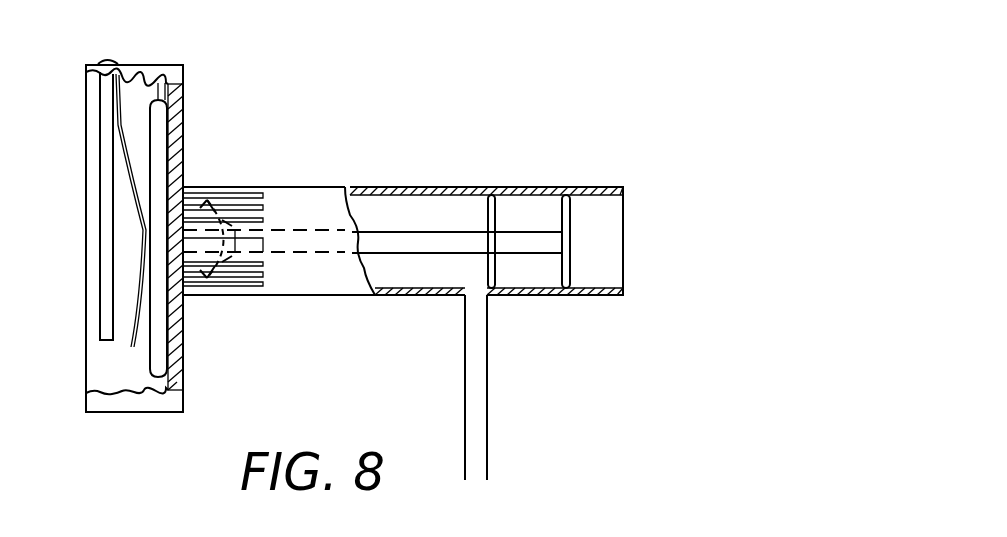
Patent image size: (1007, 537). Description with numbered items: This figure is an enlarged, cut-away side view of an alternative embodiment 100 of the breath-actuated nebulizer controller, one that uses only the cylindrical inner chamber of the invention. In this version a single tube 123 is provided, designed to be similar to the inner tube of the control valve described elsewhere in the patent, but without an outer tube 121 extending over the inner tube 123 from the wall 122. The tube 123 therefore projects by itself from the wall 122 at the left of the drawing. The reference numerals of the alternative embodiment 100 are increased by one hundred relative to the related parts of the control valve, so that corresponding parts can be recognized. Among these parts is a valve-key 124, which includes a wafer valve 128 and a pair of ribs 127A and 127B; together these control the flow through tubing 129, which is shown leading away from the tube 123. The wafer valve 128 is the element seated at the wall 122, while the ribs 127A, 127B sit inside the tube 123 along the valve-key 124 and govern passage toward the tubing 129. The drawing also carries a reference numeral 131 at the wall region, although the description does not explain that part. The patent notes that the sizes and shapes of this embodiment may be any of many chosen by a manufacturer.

The alternative embodiment 100 is at (566, 78).
The outer tube 121 is at (130, 412).
The wall 122 is at (183, 92).
The tube 123 is at (605, 296).
The valve-key 124 is at (443, 236).
The rib 127A is at (490, 196).
The rib 127B is at (568, 196).
The wafer valve 128 is at (159, 85).
The tubing 129 is at (487, 388).
The sensor element 131 is at (106, 60).